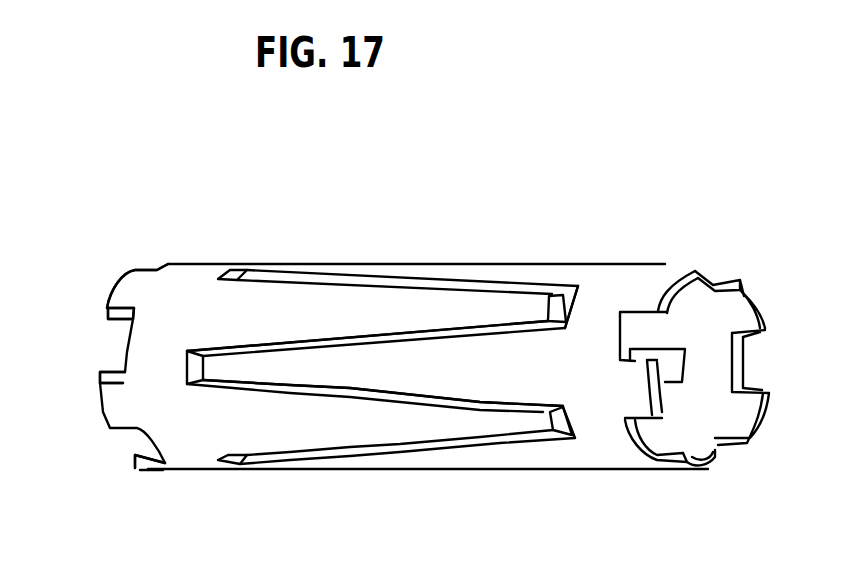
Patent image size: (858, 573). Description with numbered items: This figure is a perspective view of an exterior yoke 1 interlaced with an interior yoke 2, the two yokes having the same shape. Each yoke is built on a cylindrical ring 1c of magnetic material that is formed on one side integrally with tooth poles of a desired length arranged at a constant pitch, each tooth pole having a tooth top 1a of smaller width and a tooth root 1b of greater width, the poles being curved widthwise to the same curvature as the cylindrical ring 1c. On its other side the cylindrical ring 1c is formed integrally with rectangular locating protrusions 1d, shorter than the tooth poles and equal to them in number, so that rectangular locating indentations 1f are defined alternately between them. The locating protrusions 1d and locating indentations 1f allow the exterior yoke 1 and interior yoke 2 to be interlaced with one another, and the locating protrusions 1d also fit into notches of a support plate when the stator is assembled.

The exterior yoke 1 is at (638, 264).
The tooth top 1a is at (258, 366).
The tooth root 1b is at (476, 350).
The cylindrical ring 1c is at (592, 306).
The locating protrusions 1d is at (657, 281).
The locating indentations 1f is at (757, 362).
The interior yoke 2 is at (187, 262).